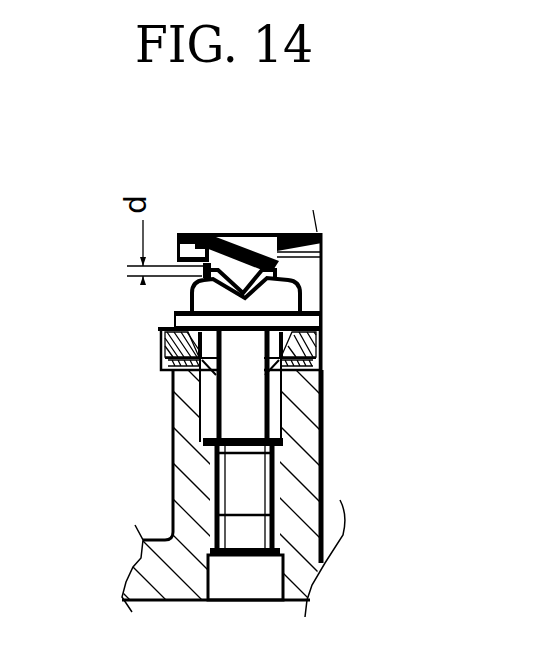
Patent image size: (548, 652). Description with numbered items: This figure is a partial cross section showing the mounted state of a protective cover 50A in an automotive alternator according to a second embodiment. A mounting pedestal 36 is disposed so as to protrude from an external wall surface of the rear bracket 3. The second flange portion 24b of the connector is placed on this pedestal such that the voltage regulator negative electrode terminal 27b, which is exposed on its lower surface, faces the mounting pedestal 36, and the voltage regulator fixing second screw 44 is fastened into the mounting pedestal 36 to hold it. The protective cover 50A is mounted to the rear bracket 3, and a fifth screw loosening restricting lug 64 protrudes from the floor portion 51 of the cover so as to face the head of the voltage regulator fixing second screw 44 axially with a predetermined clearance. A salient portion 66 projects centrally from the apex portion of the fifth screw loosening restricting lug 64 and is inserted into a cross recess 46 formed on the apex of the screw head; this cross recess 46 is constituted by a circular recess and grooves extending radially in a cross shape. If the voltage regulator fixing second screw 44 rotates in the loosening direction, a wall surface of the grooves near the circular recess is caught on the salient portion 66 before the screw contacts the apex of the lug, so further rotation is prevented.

The rear bracket 3 is at (166, 500).
The mounting pedestal 36 is at (170, 415).
The second flange portion 24b is at (160, 343).
The voltage regulator negative electrode terminal 27b is at (318, 383).
The voltage regulator fixing second screw 44 is at (308, 302).
The cross recess 46 is at (323, 268).
The protective cover 50A is at (189, 230).
The floor portion 51 is at (288, 238).
The fifth screw loosening restricting lug 64 is at (232, 258).
The salient portion 66 is at (204, 280).